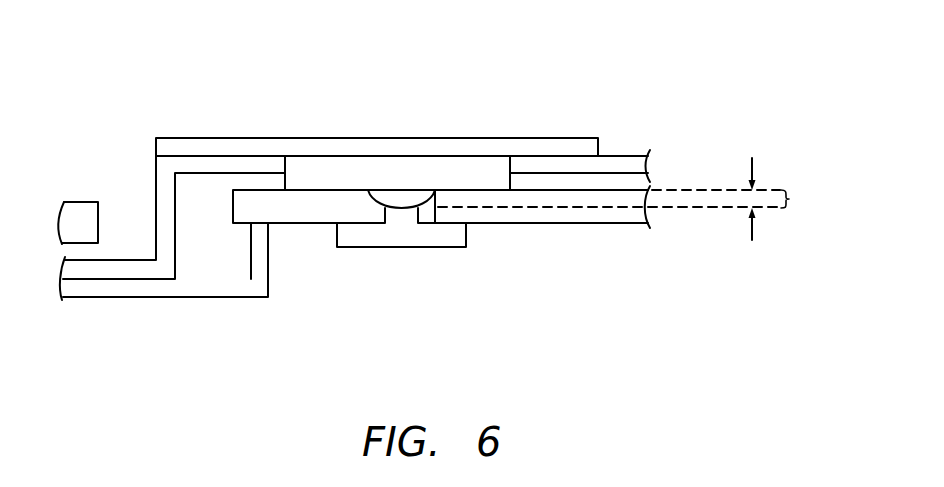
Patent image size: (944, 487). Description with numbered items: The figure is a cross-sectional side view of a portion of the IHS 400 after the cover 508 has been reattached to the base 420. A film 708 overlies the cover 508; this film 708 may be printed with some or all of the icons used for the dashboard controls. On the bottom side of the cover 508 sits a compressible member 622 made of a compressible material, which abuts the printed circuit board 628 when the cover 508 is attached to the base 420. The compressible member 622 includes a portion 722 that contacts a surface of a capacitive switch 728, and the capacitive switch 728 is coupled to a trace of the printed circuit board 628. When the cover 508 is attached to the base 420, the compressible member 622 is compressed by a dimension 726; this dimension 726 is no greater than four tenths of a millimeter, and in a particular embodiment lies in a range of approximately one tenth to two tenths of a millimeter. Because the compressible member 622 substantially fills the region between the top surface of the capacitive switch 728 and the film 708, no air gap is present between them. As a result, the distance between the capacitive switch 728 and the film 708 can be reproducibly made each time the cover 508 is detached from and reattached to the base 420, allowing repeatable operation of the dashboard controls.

The IHS 400 is at (778, 45).
The base 420 is at (83, 220).
The cover 508 is at (167, 235).
The compressible member 622 is at (312, 172).
The printed circuit board 628 is at (283, 215).
The film 708 is at (460, 152).
The portion 722 is at (402, 194).
The dimension 726 is at (635, 199).
The capacitive switch 728 is at (395, 237).